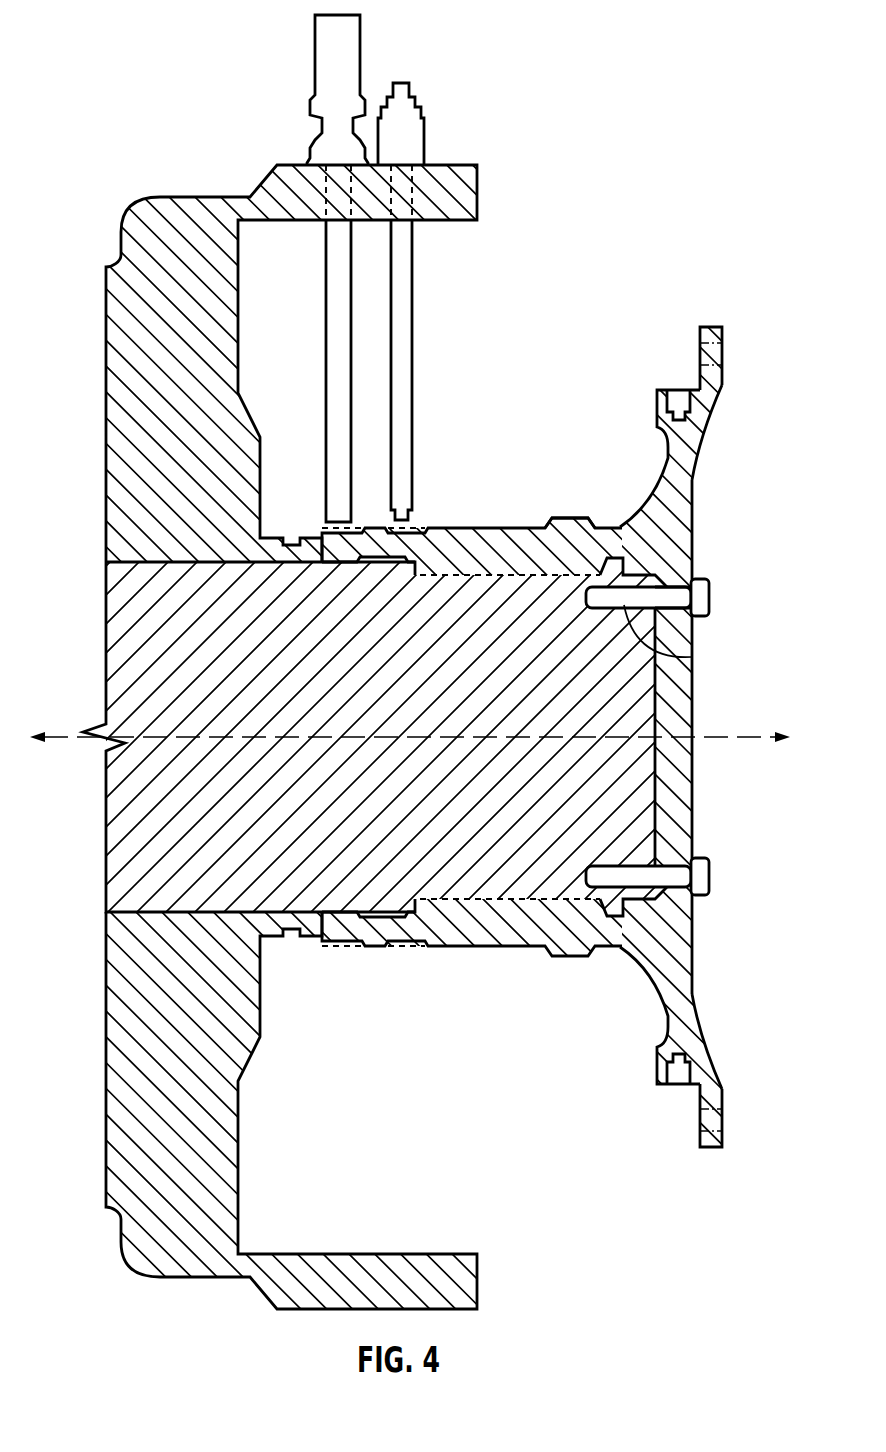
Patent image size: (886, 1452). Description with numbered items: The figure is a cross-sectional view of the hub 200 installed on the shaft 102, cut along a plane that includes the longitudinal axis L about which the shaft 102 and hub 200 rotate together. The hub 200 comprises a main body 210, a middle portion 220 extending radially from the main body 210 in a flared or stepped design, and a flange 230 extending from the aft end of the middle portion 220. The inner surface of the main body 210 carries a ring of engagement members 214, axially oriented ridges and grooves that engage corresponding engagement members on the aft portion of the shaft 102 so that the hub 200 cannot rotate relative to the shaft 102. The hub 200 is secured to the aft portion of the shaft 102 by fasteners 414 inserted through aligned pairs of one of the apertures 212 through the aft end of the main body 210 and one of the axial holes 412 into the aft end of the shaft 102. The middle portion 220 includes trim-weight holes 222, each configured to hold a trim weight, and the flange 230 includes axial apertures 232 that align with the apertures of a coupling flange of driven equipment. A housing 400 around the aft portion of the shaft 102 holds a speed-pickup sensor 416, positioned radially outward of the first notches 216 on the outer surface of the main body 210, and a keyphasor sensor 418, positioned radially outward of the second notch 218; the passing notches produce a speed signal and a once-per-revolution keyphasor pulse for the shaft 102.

The housing 400 is at (142, 213).
The shaft 102 is at (128, 590).
The hub 200 is at (640, 502).
The main body 210 is at (440, 535).
The apertures 212 is at (669, 580).
The engagement members 214 is at (490, 578).
The first notches 216 is at (347, 948).
The second notch 218 is at (405, 947).
The middle portion 220 is at (660, 980).
The trim-weight holes 222 is at (680, 1070).
The flange 230 is at (705, 327).
The apertures 232 is at (712, 360).
The axial holes 412 is at (691, 657).
The fasteners 414 is at (705, 598).
The speed-pickup sensor 416 is at (325, 360).
The keyphasor sensor 418 is at (407, 345).
The longitudinal axis L is at (752, 737).